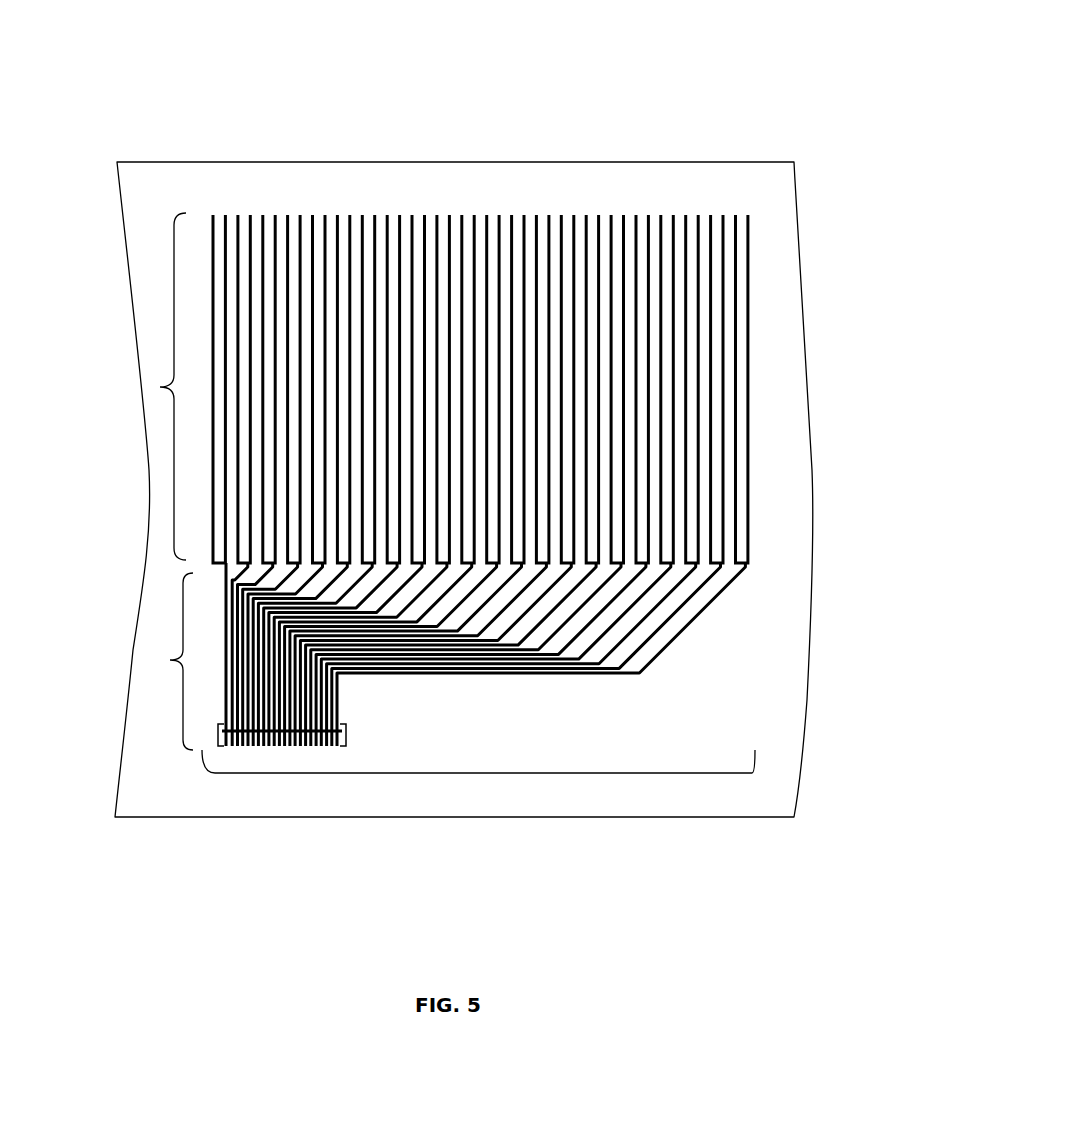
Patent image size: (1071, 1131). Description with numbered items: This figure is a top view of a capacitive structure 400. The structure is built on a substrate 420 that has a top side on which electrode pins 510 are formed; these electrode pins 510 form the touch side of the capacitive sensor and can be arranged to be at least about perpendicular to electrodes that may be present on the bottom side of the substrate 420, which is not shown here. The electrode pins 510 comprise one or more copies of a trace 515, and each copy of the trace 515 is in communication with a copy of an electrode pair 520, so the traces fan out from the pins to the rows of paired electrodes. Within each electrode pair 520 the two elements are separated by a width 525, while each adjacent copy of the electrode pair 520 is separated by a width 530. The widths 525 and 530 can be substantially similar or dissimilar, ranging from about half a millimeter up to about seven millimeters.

The capacitive structure 400 is at (669, 86).
The substrate 420 is at (192, 817).
The electrode pins 510 is at (479, 773).
The trace 515 is at (158, 660).
The electrode pair 520 is at (158, 387).
The width 525 is at (225, 212).
The width 530 is at (708, 212).